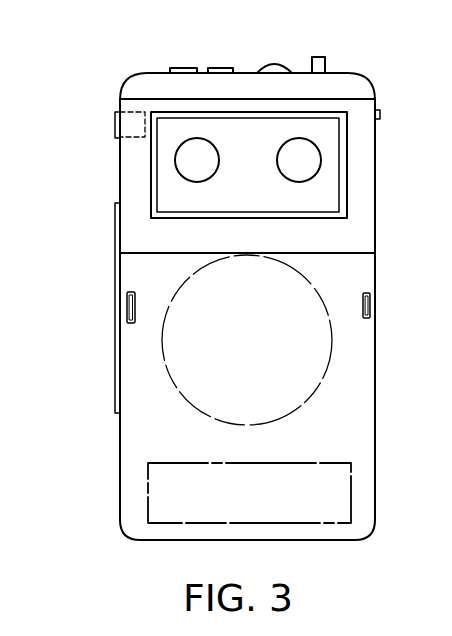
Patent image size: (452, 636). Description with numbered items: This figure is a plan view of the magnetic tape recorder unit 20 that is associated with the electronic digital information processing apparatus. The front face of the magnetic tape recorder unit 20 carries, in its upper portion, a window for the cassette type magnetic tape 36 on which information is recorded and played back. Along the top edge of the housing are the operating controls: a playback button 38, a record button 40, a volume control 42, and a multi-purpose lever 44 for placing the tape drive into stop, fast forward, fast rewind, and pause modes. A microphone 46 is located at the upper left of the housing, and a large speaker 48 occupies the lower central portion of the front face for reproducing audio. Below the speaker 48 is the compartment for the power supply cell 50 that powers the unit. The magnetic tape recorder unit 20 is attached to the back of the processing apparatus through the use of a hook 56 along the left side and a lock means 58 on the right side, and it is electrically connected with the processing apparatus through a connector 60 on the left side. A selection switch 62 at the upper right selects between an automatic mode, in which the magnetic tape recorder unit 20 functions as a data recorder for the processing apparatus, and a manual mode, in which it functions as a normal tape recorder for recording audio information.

The magnetic tape recorder unit 20 is at (110, 92).
The cassette type magnetic tape 36 is at (172, 188).
The playback button 38 is at (182, 68).
The record button 40 is at (222, 68).
The volume control 42 is at (273, 62).
The multi-purpose lever 44 is at (322, 57).
The microphone 46 is at (115, 120).
The speaker 48 is at (192, 392).
The power supply cell 50 is at (327, 515).
The hook 56 is at (117, 272).
The lock means 58 is at (369, 313).
The connector 60 is at (131, 310).
The selection switch 62 is at (381, 114).